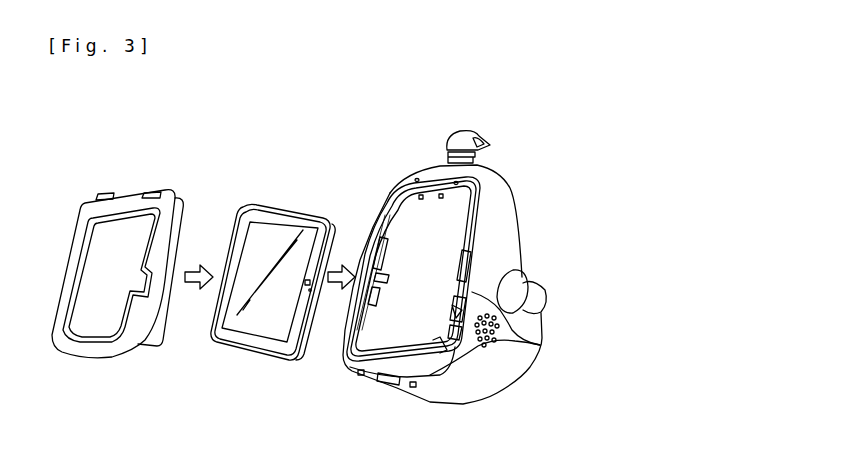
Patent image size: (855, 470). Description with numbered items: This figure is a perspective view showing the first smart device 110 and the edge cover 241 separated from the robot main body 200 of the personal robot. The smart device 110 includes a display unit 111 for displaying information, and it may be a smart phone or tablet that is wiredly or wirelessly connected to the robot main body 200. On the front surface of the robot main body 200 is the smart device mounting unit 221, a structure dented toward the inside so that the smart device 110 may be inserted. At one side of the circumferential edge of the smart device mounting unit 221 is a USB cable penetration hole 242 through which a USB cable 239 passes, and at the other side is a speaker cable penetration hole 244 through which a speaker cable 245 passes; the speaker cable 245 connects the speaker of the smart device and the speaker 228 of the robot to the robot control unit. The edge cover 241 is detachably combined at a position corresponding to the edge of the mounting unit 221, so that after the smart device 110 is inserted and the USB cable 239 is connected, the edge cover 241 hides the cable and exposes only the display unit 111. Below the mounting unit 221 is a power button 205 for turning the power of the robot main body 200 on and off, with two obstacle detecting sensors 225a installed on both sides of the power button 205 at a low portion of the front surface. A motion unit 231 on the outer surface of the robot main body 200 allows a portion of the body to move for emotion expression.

The robot main body 200 is at (512, 155).
The first smart device 110 is at (298, 196).
The display unit 111 is at (253, 260).
The edge cover 241 is at (132, 189).
The USB cable 239 is at (378, 227).
The USB cable penetration hole 242 is at (375, 262).
The motion unit 231 is at (465, 130).
The smart device mounting unit 221 is at (450, 231).
The speaker cable penetration hole 244 is at (500, 280).
The speaker cable 245 is at (486, 327).
The speaker 228 is at (538, 348).
The obstacle detecting sensors 225a is at (357, 372).
The power button 205 is at (378, 380).